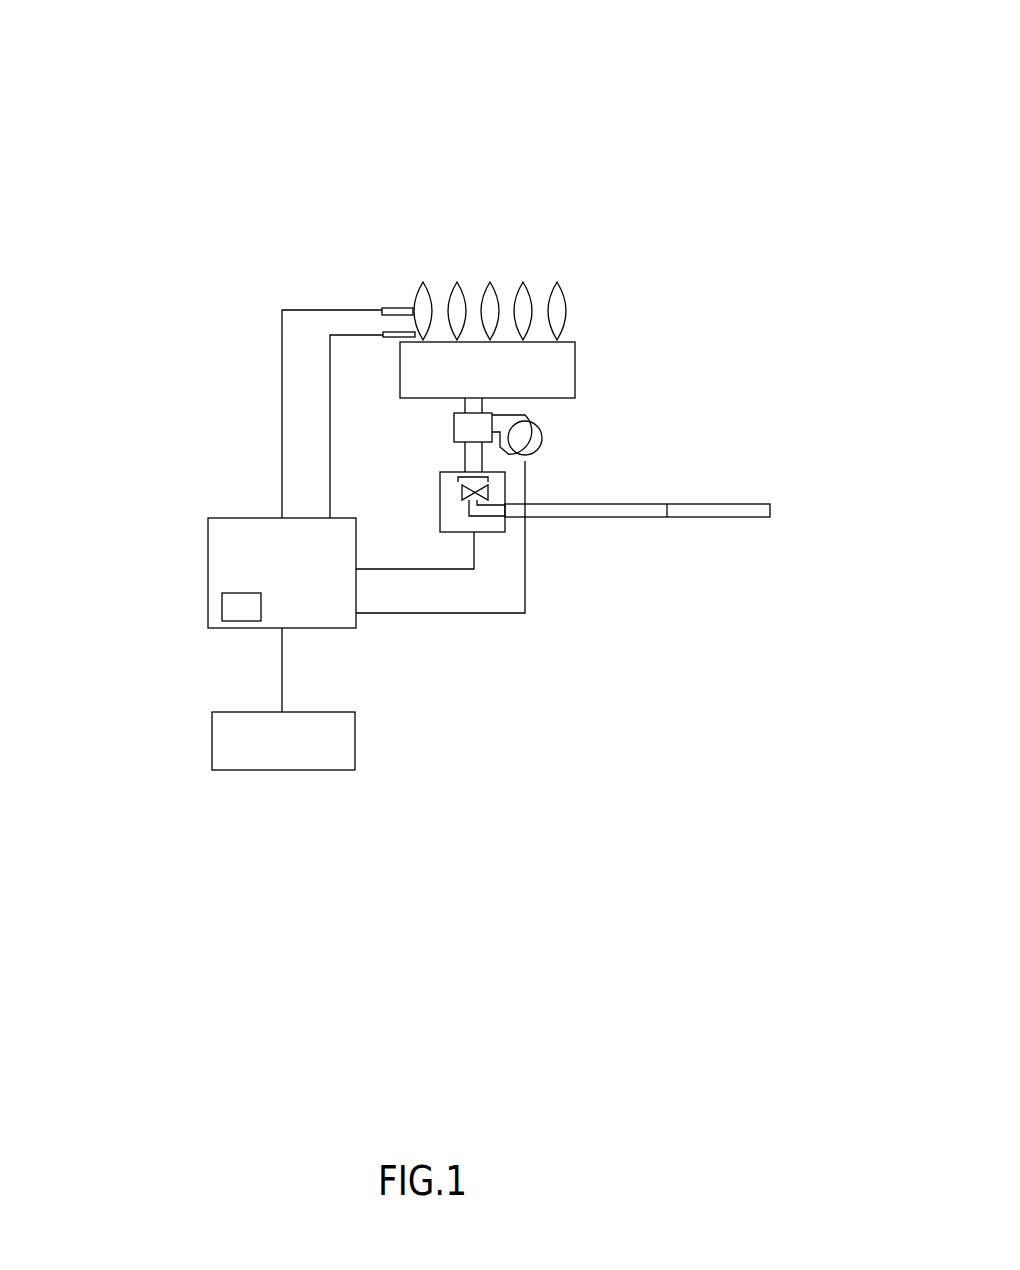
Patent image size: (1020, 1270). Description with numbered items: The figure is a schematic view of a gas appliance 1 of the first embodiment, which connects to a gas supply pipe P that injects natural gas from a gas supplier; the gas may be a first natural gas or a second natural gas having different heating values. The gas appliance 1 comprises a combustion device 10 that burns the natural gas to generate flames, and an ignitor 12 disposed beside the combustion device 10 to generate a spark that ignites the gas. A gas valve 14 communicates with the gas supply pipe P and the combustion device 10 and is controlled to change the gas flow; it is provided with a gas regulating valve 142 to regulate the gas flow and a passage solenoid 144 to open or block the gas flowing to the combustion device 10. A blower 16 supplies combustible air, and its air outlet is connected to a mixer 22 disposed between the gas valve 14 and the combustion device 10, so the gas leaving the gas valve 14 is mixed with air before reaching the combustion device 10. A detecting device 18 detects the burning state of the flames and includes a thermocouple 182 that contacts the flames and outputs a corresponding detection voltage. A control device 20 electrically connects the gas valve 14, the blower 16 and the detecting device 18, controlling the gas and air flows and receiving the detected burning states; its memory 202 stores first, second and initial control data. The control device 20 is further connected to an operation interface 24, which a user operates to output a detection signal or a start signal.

The gas appliance 1 is at (545, 130).
The combustion device 10 is at (570, 355).
The ignitor 12 is at (395, 338).
The gas valve 14 is at (497, 535).
The gas regulating valve 142 is at (458, 482).
The passage solenoid 144 is at (472, 493).
The blower 16 is at (552, 435).
The detecting device 18 is at (402, 305).
The thermocouple 182 is at (390, 306).
The control device 20 is at (208, 531).
The memory 202 is at (235, 607).
The mixer 22 is at (472, 431).
The operation interface 24 is at (357, 738).
The gas supply pipe P is at (693, 510).